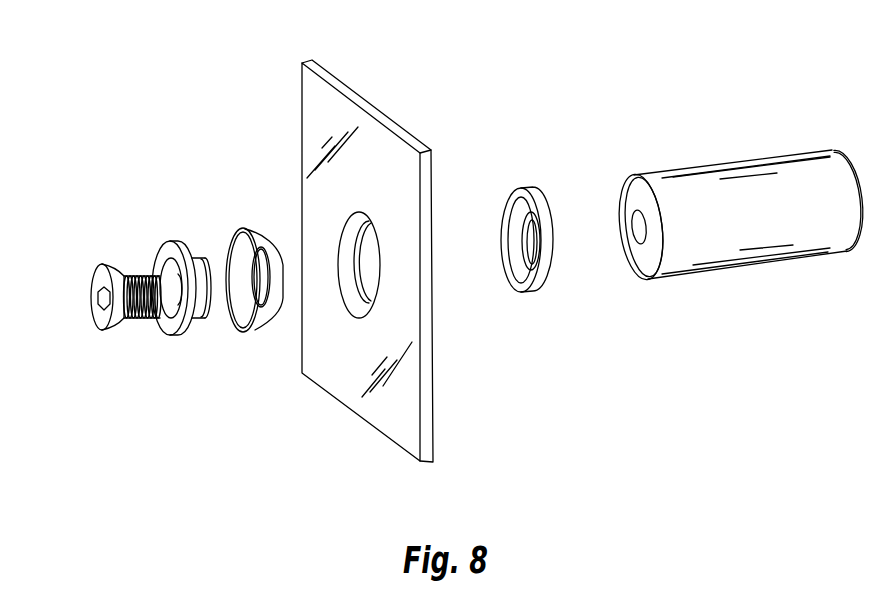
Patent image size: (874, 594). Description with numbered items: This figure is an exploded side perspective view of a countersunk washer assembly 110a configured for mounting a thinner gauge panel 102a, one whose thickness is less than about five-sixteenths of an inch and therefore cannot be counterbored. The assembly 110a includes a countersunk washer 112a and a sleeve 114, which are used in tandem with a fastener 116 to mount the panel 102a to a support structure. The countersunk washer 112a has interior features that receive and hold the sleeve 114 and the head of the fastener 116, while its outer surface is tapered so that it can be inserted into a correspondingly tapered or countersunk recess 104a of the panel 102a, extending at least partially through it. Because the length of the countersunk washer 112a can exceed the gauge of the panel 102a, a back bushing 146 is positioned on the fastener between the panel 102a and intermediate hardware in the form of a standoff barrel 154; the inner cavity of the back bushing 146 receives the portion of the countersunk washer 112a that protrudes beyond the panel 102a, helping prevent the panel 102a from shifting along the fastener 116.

The countersunk washer assembly 110a is at (112, 135).
The panel 102a is at (317, 97).
The tapered recess 104a is at (367, 281).
The fastener 116 is at (100, 276).
The sleeve 114 is at (163, 248).
The countersunk washer 112a is at (240, 233).
The back bushing 146 is at (512, 194).
The standoff barrel 154 is at (710, 185).